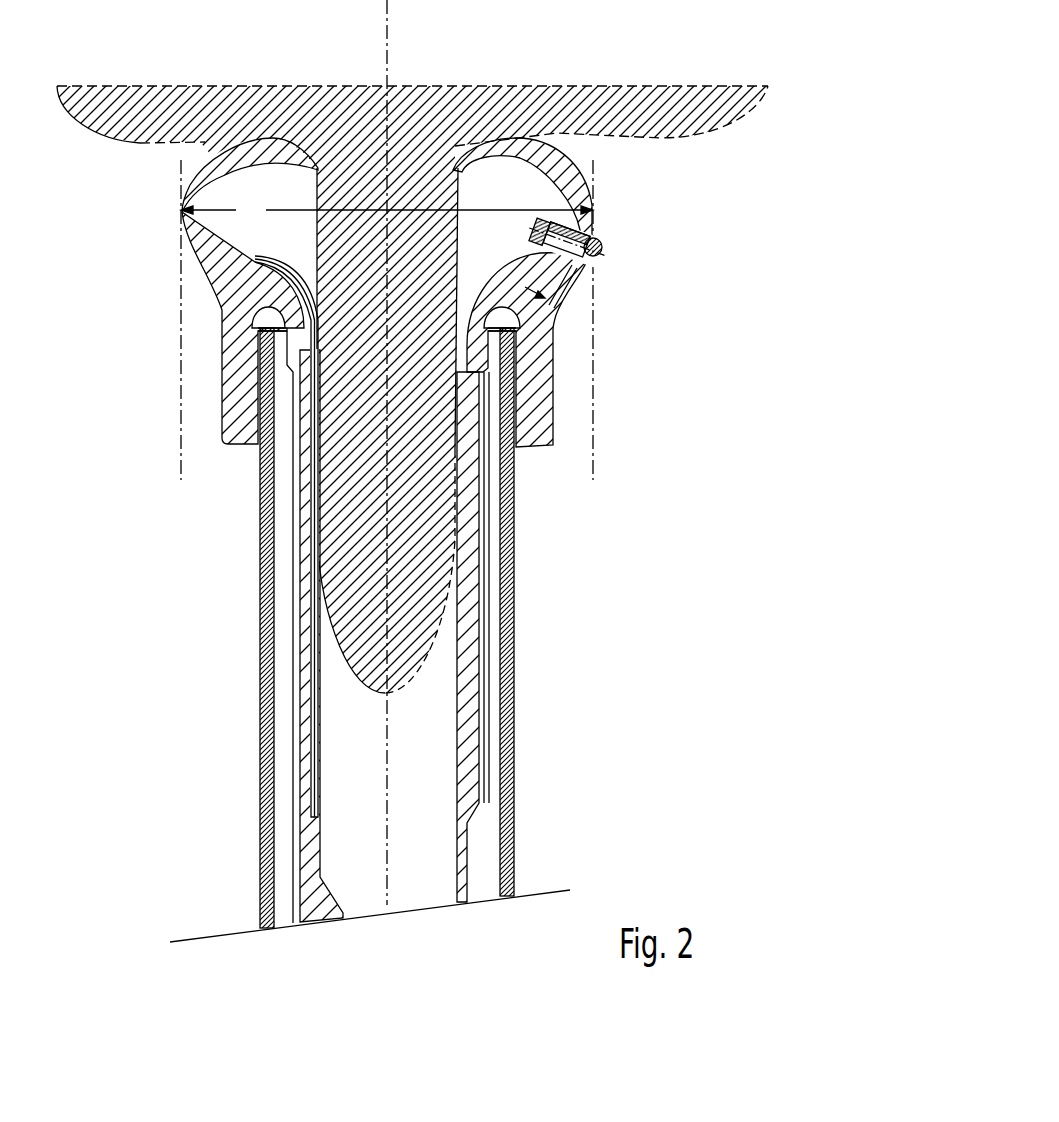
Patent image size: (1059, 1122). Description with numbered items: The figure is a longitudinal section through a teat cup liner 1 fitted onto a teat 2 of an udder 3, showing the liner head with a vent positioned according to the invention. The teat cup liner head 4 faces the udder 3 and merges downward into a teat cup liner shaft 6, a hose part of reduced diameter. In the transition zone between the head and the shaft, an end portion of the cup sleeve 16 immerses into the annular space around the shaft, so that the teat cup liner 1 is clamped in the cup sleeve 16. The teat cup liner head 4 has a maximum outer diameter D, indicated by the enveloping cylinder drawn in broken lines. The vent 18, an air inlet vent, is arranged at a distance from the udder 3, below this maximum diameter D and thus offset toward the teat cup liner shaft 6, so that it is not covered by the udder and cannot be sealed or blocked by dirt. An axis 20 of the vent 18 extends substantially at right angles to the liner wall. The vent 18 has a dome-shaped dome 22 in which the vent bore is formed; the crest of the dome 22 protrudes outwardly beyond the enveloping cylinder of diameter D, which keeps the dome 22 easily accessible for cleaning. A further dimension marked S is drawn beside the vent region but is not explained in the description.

The teat cup liner 1 is at (390, 533).
The teat 2 is at (330, 450).
The udder 3 is at (657, 97).
The teat cup liner head 4 is at (454, 292).
The teat cup liner shaft 6 is at (305, 607).
The cup sleeve 16 is at (515, 507).
The vent 18 is at (625, 264).
The axis 20 is at (605, 268).
The dome 22 is at (601, 256).
The maximum diameter D is at (387, 211).
The gap width S is at (548, 310).